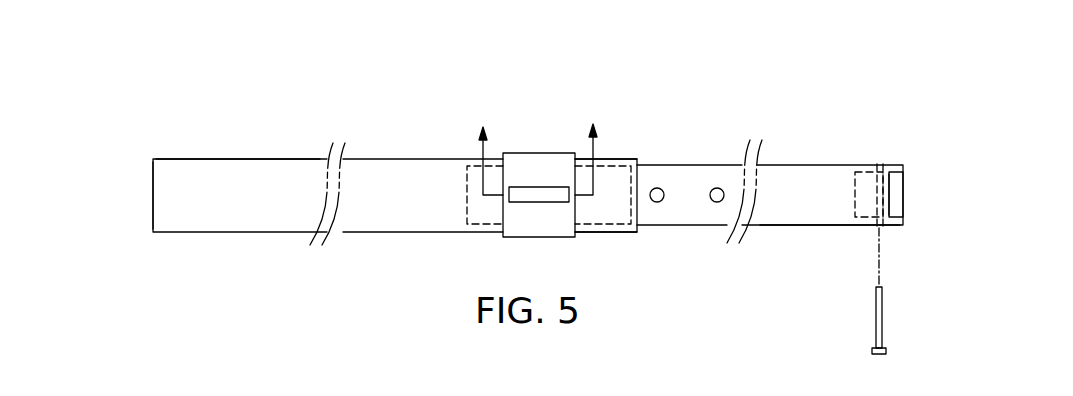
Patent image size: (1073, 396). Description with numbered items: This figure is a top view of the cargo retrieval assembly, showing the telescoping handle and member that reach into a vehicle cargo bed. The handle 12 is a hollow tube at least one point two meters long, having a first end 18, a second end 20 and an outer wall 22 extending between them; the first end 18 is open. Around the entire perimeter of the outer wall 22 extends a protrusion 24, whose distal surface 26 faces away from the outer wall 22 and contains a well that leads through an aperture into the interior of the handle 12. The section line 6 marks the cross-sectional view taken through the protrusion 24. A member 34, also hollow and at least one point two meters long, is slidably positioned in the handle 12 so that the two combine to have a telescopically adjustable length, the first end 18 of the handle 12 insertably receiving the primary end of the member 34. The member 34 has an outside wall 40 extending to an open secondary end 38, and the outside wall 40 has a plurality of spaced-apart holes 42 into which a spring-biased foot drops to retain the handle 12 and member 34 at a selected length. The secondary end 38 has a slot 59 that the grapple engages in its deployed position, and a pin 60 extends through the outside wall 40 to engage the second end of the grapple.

The handle 12 is at (378, 158).
The second end 20 is at (153, 192).
The outer wall 22 is at (217, 158).
The first end 18 is at (637, 178).
The protrusion 24 is at (553, 152).
The distal surface 26 is at (514, 173).
The section line 6 is at (538, 154).
The member 34 is at (800, 165).
The outside wall 40 is at (802, 215).
The holes 42 is at (717, 203).
The secondary end 38 is at (903, 170).
The slot 59 is at (894, 194).
The pin 60 is at (880, 314).